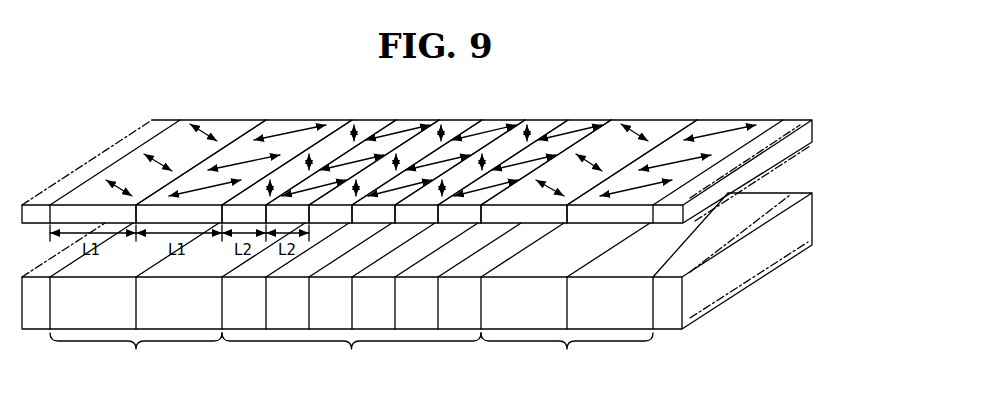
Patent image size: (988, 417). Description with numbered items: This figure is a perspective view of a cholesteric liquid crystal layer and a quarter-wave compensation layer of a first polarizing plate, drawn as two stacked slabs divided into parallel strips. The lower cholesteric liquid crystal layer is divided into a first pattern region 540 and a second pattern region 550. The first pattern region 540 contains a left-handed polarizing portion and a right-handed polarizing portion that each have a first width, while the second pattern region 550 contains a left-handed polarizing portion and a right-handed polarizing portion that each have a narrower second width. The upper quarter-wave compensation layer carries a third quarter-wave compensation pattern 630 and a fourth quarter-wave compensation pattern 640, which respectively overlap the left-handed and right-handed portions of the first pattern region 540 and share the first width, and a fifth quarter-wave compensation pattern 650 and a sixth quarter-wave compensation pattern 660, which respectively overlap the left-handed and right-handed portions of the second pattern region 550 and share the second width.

The third λ/4 compensation pattern 630 is at (218, 120).
The fourth λ/4 compensation pattern 640 is at (303, 120).
The fifth λ/4 compensation pattern 650 is at (371, 120).
The sixth λ/4 compensation pattern 660 is at (413, 120).
The first pattern region 540 is at (351, 298).
The second pattern region 550 is at (371, 298).